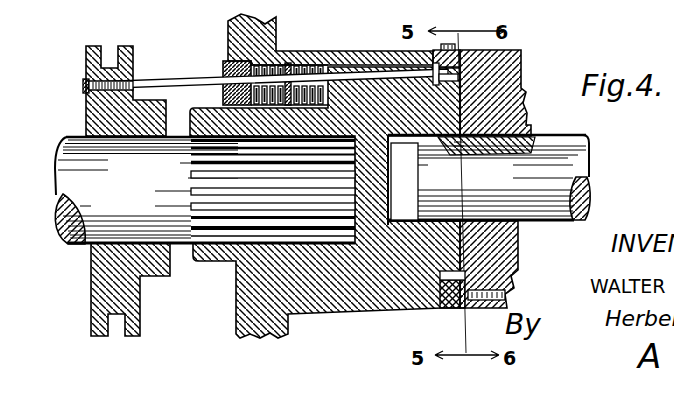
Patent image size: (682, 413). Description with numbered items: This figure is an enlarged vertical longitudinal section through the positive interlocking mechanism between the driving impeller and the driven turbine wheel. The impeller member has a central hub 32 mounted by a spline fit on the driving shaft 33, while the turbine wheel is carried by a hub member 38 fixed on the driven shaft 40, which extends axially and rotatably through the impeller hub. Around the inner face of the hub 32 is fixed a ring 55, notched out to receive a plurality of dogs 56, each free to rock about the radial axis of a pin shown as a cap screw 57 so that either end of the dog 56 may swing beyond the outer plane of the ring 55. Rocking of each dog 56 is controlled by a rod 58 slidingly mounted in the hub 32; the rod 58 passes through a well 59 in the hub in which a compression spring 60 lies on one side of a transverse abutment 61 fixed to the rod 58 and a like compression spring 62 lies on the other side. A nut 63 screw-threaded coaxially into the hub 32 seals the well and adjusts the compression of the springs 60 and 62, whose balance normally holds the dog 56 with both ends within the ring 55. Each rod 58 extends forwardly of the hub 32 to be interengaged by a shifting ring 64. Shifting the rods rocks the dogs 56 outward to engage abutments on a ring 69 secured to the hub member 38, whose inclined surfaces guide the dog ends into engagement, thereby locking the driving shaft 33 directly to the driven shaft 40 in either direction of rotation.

The central hub 32 is at (326, 294).
The driving shaft 33 is at (62, 132).
The hub member 38 is at (496, 102).
The driven shaft 40 is at (580, 143).
The ring 55 is at (440, 298).
The dog 56 is at (420, 58).
The cap screw 57 is at (410, 24).
The rod 58 is at (143, 76).
The well 59 is at (303, 57).
The compression spring 60 is at (325, 58).
The transverse abutment 61 is at (280, 55).
The compression spring 62 is at (252, 43).
The nut 63 is at (217, 56).
The shifting ring 64 is at (88, 66).
The ring 69 is at (470, 42).